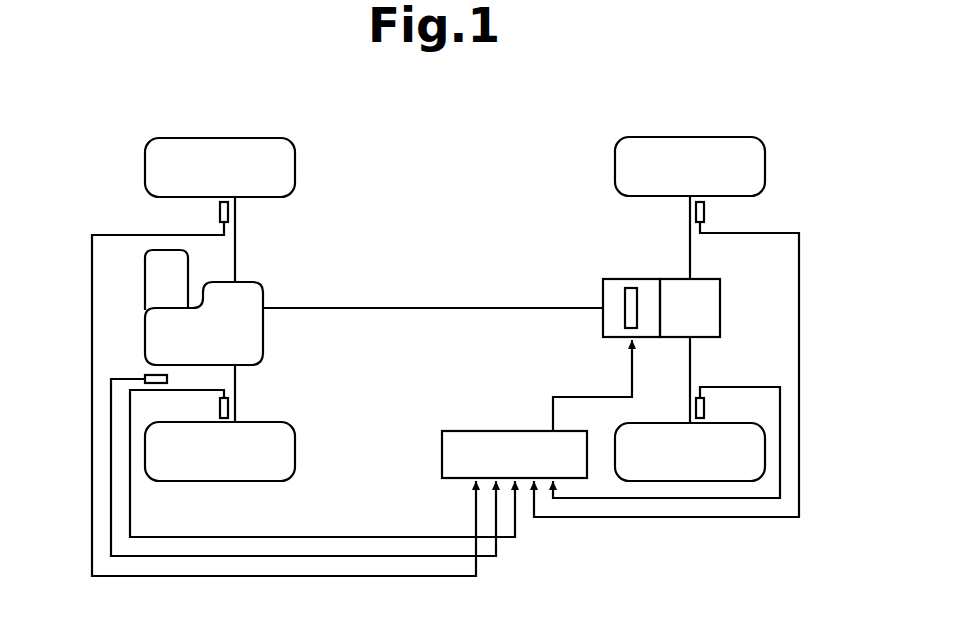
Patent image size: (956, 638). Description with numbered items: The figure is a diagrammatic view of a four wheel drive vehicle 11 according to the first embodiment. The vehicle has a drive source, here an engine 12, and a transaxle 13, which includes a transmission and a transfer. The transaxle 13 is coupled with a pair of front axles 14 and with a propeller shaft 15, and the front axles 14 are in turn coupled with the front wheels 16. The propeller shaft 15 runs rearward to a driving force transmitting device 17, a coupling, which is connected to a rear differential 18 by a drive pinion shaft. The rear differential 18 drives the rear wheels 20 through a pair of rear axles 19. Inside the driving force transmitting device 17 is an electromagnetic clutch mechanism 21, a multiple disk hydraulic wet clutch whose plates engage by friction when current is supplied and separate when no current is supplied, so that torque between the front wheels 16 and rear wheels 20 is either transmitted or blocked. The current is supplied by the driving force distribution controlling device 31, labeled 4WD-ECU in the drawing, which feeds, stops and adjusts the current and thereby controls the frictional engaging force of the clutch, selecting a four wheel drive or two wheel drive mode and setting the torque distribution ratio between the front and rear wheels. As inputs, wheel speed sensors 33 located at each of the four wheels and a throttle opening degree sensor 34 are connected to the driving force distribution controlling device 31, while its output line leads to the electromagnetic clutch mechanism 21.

The four wheel drive vehicle 11 is at (752, 112).
The engine 12 is at (144, 290).
The transaxle 13 is at (264, 337).
The front axles 14 is at (236, 245).
The propeller shaft 15 is at (433, 307).
The front wheels 16 is at (295, 162).
The driving force transmitting device 17 is at (603, 281).
The rear differential 18 is at (721, 305).
The rear axles 19 is at (691, 255).
The rear wheels 20 is at (614, 165).
The electromagnetic clutch mechanism 21 is at (631, 287).
The driving force distribution controlling device 31 is at (475, 429).
The wheel speed sensors 33 is at (219, 212).
The throttle opening degree sensor 34 is at (146, 374).